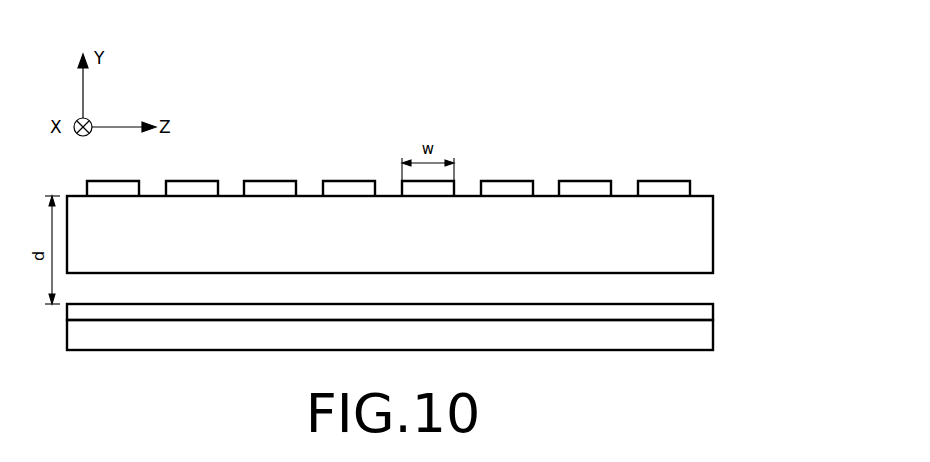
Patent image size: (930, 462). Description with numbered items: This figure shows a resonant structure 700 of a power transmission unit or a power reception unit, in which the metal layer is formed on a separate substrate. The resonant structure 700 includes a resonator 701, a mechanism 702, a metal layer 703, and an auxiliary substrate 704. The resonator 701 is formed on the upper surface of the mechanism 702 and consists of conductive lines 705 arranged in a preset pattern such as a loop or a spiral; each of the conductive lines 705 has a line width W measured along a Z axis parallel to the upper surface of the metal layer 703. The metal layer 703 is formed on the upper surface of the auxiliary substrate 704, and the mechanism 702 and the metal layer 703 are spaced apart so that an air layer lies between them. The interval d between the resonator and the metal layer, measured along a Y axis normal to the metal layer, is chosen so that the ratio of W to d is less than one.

The resonant structure 700 is at (718, 147).
The resonator 701 is at (506, 165).
The mechanism 702 is at (705, 240).
The metal layer 703 is at (705, 315).
The auxiliary substrate 704 is at (705, 345).
The conductive lines 705 is at (658, 186).